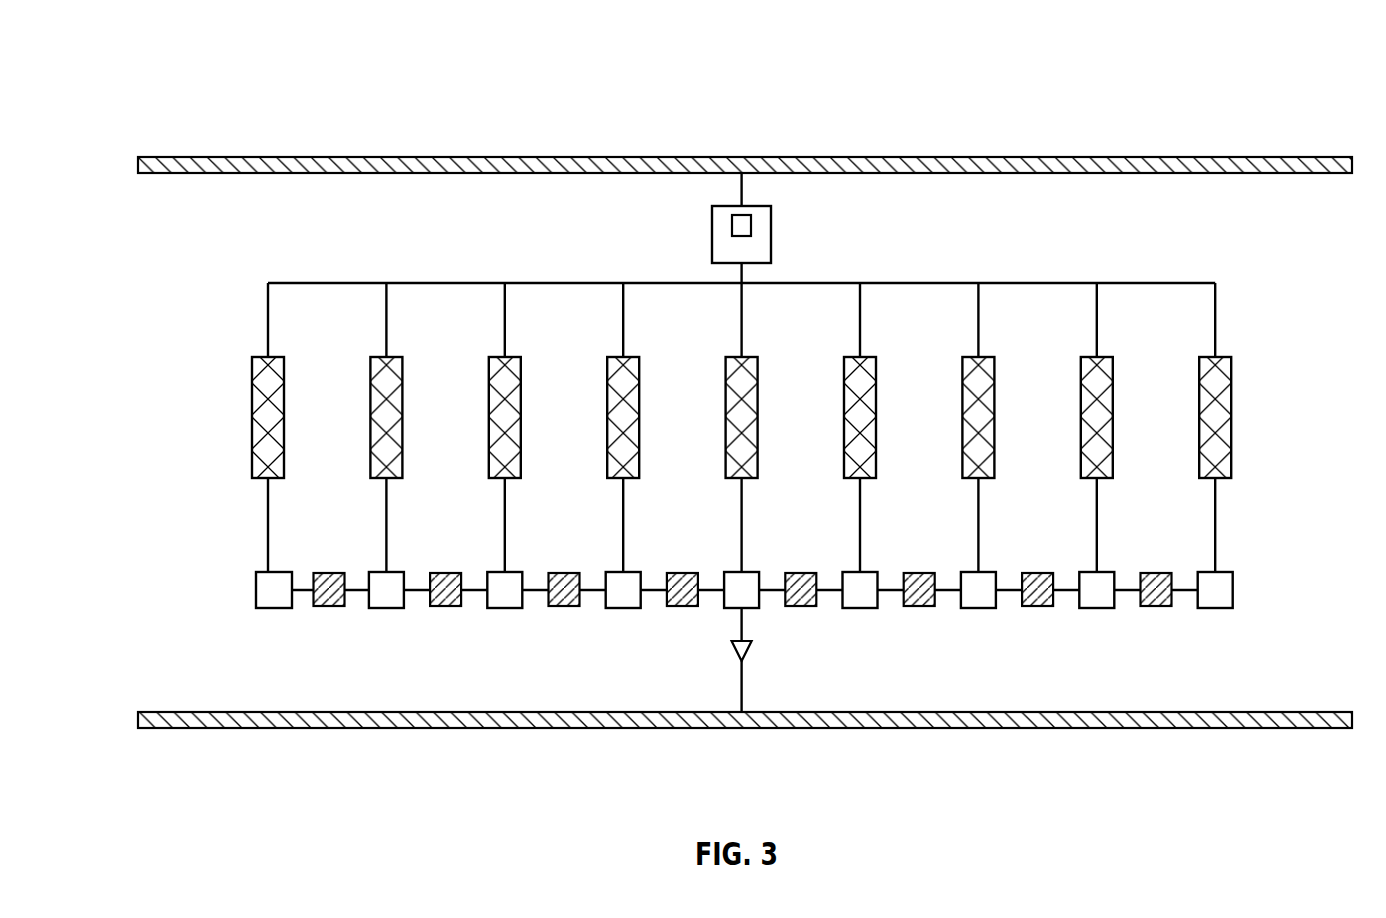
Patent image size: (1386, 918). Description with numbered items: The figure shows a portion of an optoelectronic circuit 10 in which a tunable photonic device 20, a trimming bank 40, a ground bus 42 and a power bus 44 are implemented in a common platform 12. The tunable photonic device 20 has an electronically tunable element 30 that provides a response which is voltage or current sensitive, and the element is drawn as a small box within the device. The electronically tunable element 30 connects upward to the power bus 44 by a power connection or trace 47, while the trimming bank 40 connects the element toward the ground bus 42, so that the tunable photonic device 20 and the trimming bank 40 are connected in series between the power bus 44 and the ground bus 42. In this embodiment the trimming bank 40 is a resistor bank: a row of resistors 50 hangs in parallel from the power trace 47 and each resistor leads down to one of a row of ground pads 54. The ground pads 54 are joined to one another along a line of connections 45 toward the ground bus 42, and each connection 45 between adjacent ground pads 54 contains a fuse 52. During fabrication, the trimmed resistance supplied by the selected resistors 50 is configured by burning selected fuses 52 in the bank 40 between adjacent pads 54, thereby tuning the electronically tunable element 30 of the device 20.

The optoelectronic circuit 10 is at (180, 80).
The common platform 12 is at (757, 132).
The tunable photonic device 20 is at (690, 232).
The electronically tunable element 30 is at (752, 231).
The trimming bank 40 is at (1242, 297).
The ground bus 42 is at (1105, 729).
The power bus 44 is at (1112, 156).
The ground connection 45 is at (743, 689).
The power connection 47 is at (1017, 282).
The resistor 50 is at (252, 385).
The fuse 52 is at (329, 607).
The ground pad 54 is at (255, 591).